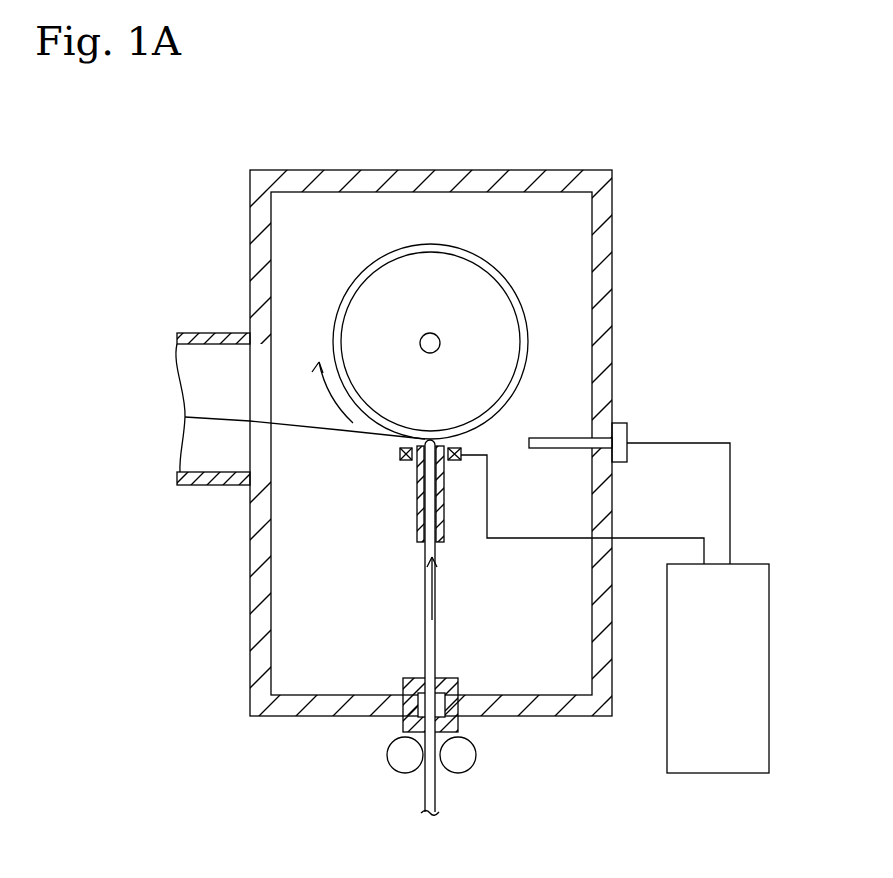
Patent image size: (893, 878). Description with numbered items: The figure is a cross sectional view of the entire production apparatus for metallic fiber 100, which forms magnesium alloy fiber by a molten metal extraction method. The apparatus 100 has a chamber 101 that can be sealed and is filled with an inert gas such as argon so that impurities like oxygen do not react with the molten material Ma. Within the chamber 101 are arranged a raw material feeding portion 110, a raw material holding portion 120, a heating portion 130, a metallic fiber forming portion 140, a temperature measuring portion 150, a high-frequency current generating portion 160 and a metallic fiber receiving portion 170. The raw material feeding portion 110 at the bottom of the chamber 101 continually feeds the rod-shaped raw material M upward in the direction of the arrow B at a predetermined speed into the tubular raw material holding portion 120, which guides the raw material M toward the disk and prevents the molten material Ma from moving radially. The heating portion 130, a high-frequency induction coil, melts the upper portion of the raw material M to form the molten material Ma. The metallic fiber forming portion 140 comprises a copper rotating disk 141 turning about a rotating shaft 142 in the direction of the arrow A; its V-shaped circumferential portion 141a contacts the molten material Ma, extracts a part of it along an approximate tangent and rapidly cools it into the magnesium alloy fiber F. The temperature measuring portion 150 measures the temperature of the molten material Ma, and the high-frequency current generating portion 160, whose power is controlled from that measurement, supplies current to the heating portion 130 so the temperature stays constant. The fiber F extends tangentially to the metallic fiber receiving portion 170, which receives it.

The production apparatus for metallic fiber 100 is at (582, 151).
The chamber 101 is at (600, 258).
The raw material feeding portion 110 is at (382, 758).
The raw material holding portion 120 is at (417, 532).
The heating portion 130 is at (455, 462).
The metallic fiber forming portion 140 is at (715, 312).
The rotating disk 141 is at (485, 385).
The circumferential portion 141a is at (519, 370).
The rotating shaft 142 is at (440, 343).
The temperature measuring portion 150 is at (555, 442).
The high-frequency current generating portion 160 is at (720, 750).
The metallic fiber receiving portion 170 is at (218, 362).
The magnesium alloy fiber F is at (215, 427).
The raw material M is at (430, 642).
The molten material Ma is at (400, 452).
The rotation direction of the disk A is at (330, 392).
The feeding direction of the raw material B is at (442, 588).